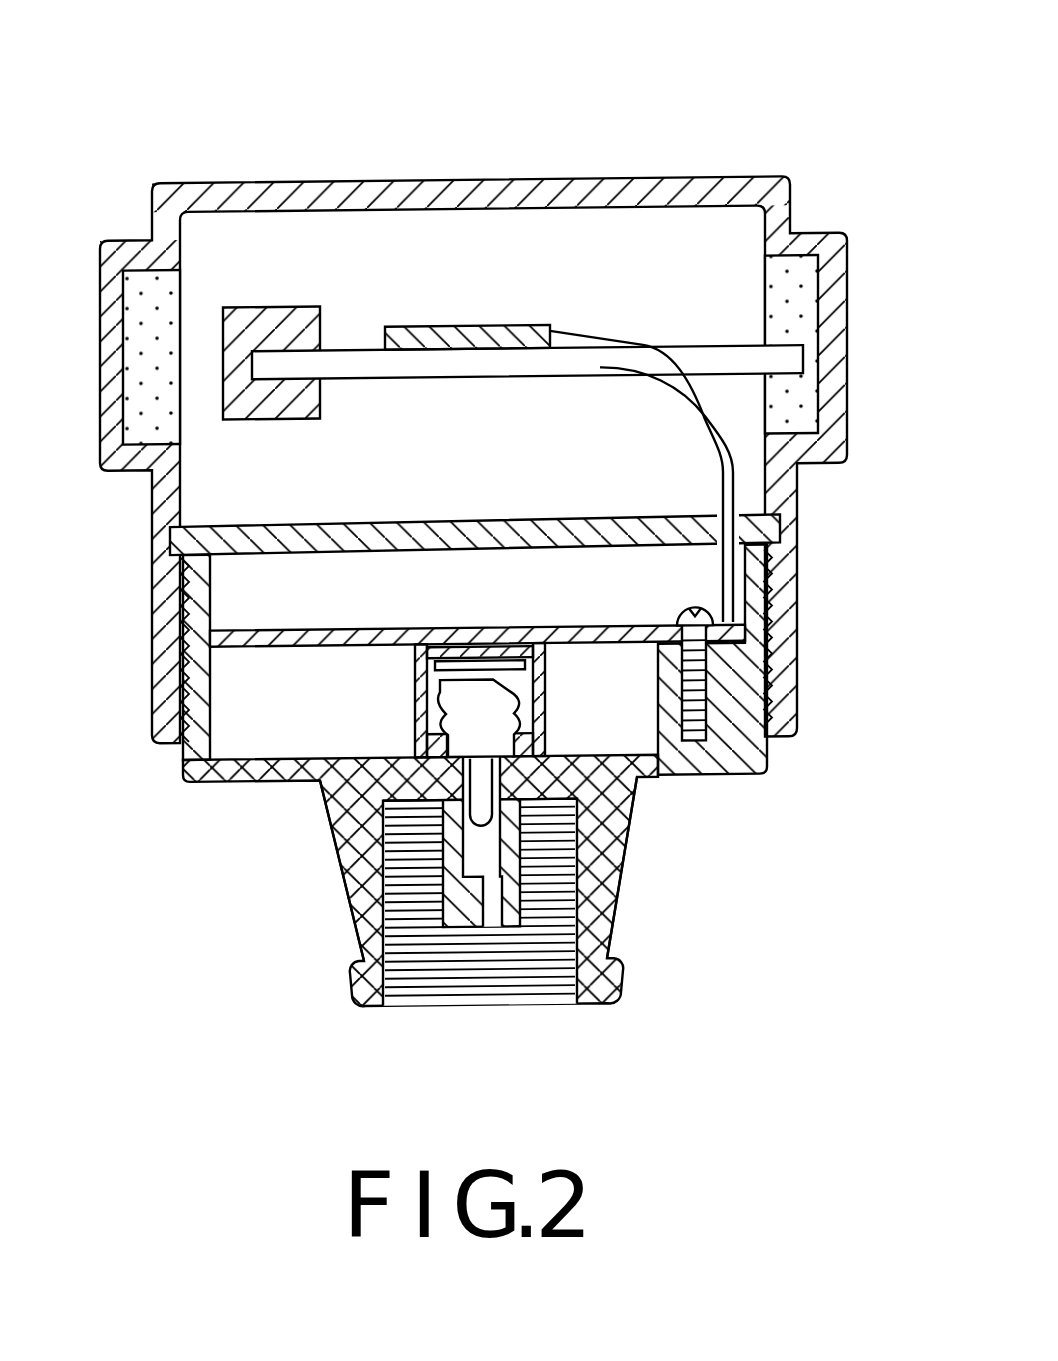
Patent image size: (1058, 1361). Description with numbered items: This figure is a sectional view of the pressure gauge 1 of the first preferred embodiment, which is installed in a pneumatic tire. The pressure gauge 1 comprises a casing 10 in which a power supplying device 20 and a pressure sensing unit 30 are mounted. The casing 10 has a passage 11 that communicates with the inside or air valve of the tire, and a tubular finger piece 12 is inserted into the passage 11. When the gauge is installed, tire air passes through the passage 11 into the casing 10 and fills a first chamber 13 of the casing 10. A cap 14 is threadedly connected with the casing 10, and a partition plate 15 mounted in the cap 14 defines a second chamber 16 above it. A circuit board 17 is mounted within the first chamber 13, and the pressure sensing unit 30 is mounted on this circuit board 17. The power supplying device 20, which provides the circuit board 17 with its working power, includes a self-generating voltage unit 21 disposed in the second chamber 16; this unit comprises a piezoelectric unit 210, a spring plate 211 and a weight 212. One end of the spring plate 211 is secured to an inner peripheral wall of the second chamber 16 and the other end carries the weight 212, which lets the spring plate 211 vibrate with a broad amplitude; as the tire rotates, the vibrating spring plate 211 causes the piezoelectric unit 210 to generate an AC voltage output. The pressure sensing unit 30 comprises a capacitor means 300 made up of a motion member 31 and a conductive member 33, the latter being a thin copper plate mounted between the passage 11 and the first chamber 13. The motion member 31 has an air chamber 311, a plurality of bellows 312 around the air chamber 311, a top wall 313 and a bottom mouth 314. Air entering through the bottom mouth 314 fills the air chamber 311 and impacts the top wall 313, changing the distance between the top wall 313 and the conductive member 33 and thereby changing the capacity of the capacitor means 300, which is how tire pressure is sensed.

The pressure gauge 1 is at (667, 102).
The casing 10 is at (733, 752).
The passage 11 is at (495, 918).
The tubular finger piece 12 is at (520, 927).
The first chamber 13 is at (278, 722).
The cap 14 is at (780, 183).
The partition plate 15 is at (253, 547).
The second chamber 16 is at (250, 492).
The circuit board 17 is at (263, 650).
The power supplying device 20 is at (450, 290).
The self-generating voltage unit 21 is at (237, 283).
The pressure sensing unit 30 is at (290, 782).
The motion member 31 is at (545, 705).
The conductive member 33 is at (433, 630).
The piezoelectric unit 210 is at (540, 327).
The spring plate 211 is at (355, 352).
The weight 212 is at (272, 322).
The capacitor means 300 is at (320, 787).
The air chamber 311 is at (445, 812).
The bellows 312 is at (478, 742).
The top wall 313 is at (628, 755).
The bottom mouth 314 is at (383, 893).